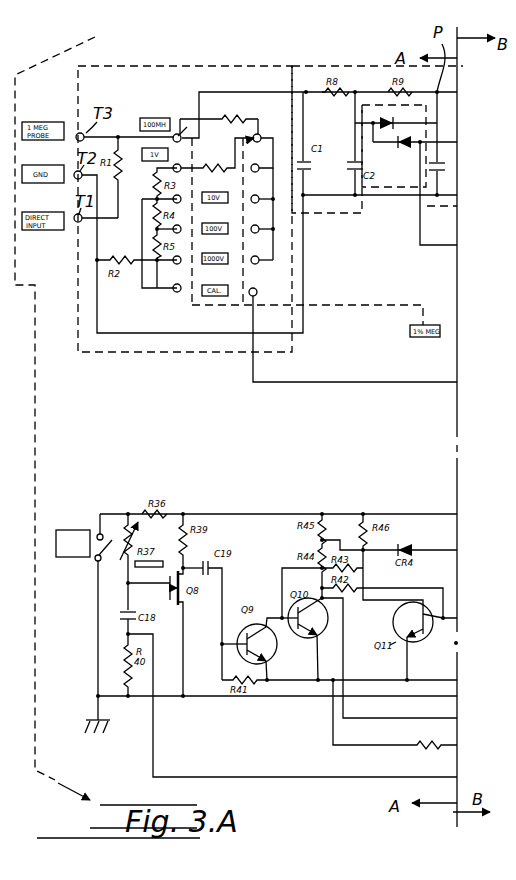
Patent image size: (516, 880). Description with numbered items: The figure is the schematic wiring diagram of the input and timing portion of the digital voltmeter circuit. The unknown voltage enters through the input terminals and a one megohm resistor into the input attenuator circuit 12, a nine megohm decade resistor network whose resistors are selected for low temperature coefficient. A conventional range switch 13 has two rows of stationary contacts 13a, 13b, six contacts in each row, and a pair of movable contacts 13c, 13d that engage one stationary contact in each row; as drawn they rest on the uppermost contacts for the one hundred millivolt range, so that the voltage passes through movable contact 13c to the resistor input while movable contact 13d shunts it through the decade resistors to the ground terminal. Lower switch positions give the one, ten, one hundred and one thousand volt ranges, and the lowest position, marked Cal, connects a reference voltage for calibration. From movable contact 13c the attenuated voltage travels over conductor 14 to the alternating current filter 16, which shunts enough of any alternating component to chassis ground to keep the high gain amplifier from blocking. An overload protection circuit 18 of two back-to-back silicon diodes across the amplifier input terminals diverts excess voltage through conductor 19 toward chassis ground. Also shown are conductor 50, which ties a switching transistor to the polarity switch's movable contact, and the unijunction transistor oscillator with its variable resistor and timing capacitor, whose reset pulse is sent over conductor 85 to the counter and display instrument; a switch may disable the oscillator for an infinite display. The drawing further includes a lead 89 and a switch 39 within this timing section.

The input attenuator circuit 12 is at (152, 355).
The range switch 13 is at (207, 183).
The row of stationary contacts 13a is at (158, 291).
The row of stationary contacts 13b is at (266, 280).
The movable contact 13c is at (185, 122).
The movable contact 13d is at (256, 133).
The conductor 14 is at (230, 92).
The alternating current filter 16 is at (335, 216).
The overload protection circuit 18 is at (400, 190).
The conductor 19 is at (438, 193).
The pull switch 39 is at (84, 537).
The conductor 50 is at (393, 383).
The conductor 85 is at (251, 777).
The output lead 89 is at (388, 719).